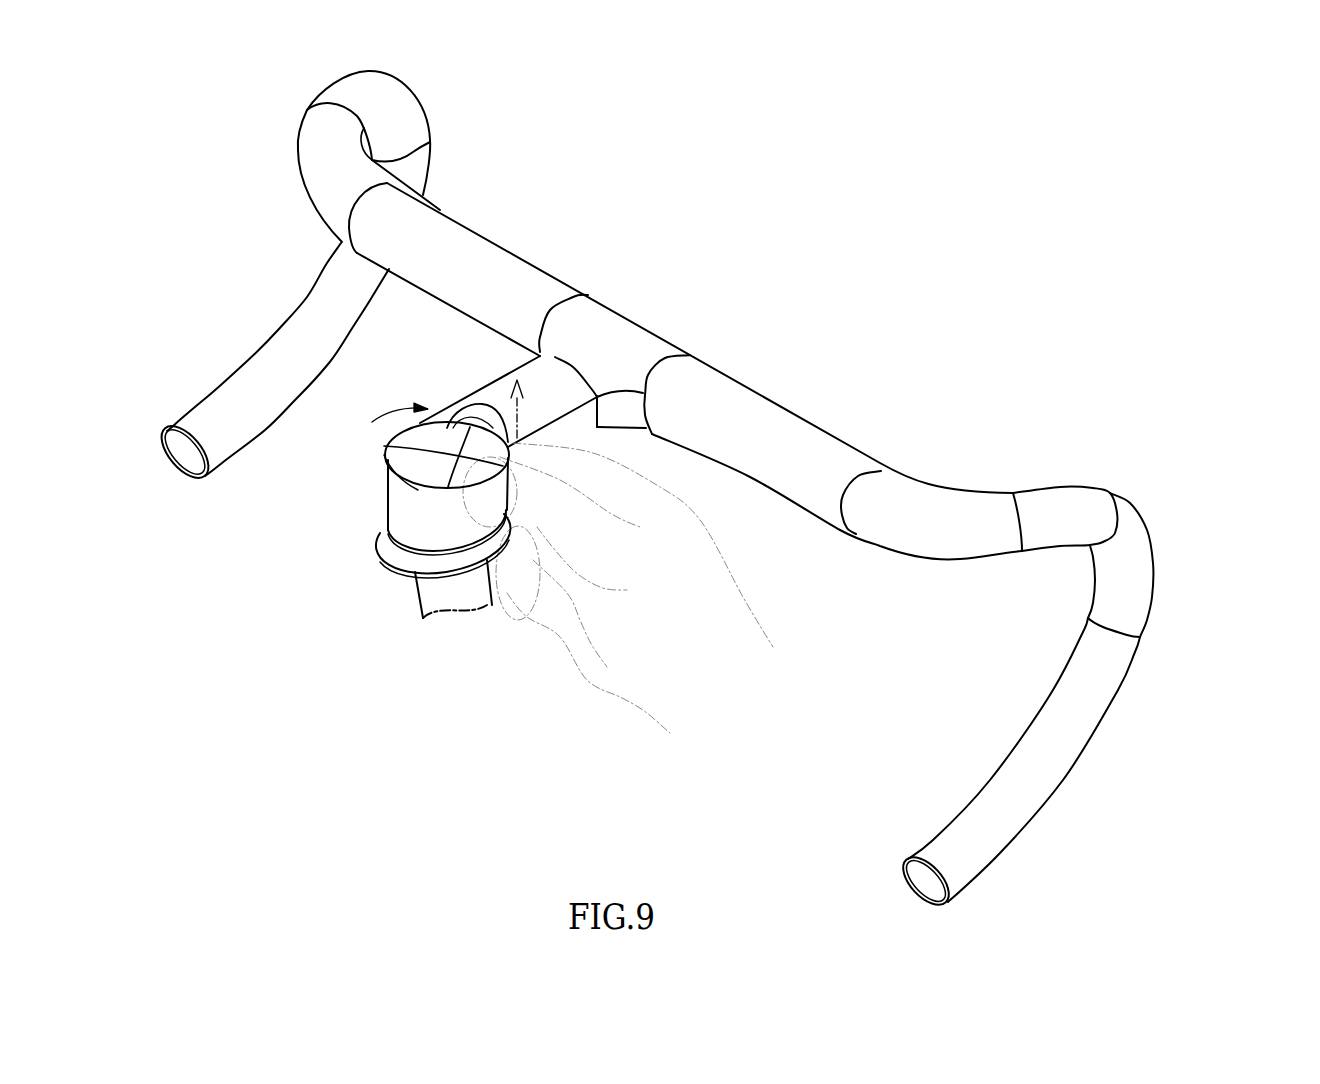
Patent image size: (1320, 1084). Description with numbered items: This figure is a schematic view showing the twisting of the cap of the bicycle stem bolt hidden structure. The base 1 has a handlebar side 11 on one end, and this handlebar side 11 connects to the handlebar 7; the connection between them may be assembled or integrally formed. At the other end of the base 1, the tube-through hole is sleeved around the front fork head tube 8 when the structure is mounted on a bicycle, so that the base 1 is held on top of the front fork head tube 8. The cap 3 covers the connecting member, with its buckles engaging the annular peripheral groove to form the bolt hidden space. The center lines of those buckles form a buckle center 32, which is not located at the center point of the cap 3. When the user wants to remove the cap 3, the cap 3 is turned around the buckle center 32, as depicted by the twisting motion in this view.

The base 1 is at (695, 492).
The handlebar side 11 is at (558, 377).
The cap 3 is at (403, 433).
The buckle center 32 is at (420, 443).
The front fork head tube 8 is at (430, 587).
The handlebar 7 is at (1139, 542).